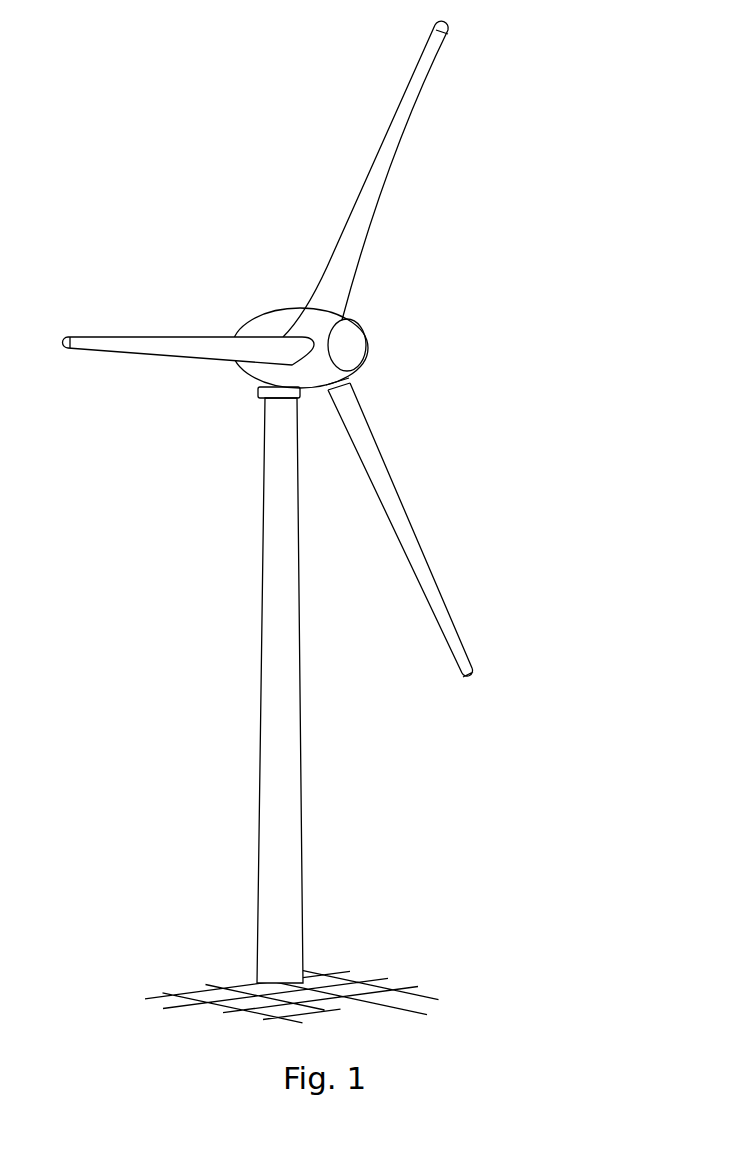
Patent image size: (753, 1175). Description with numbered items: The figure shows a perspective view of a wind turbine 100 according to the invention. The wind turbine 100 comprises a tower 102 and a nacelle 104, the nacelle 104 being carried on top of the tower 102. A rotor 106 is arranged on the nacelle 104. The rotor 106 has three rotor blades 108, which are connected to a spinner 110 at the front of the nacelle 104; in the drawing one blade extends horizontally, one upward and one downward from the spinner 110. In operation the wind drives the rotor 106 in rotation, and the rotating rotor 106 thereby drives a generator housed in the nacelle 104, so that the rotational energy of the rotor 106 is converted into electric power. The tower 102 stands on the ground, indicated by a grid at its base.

The wind turbine 100 is at (309, 522).
The tower 102 is at (287, 783).
The nacelle 104 is at (275, 323).
The rotor 106 is at (309, 349).
The rotor blades 108 is at (402, 128).
The spinner 110 is at (350, 345).